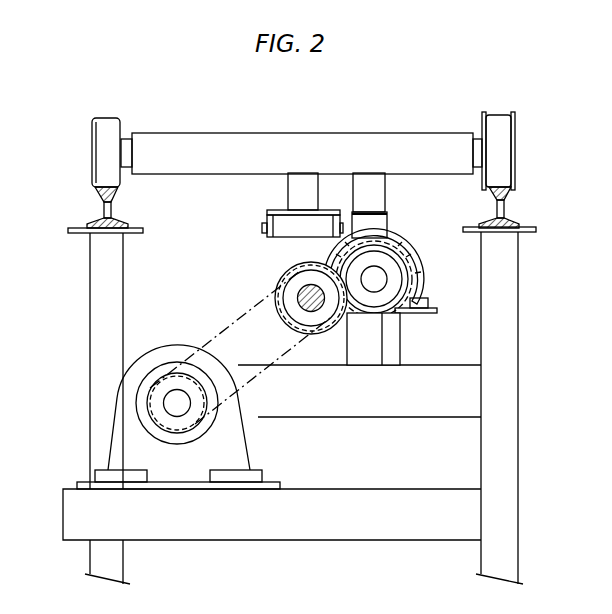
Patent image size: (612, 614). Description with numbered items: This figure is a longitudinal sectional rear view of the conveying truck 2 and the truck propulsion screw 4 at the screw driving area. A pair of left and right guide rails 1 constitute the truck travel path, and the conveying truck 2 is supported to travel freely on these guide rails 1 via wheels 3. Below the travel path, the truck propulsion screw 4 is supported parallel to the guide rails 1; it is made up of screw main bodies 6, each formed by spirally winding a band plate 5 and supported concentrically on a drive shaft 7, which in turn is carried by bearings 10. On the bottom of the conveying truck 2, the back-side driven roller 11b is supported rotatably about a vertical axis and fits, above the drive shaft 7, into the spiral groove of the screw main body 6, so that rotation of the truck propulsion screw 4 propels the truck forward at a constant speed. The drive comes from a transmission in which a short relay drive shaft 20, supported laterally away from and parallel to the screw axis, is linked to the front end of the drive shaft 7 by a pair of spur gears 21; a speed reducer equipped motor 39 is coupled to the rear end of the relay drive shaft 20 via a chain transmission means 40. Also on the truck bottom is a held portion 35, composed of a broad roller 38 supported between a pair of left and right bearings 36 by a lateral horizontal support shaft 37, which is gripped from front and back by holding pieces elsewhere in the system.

The guide rails 1 is at (97, 192).
The conveying truck 2 is at (217, 128).
The wheels 3 is at (100, 144).
The truck propulsion screw 4 is at (405, 215).
The band plate 5 is at (420, 261).
The screw main body 6 is at (419, 244).
The drive shaft 7 is at (378, 279).
The bearings 10 is at (407, 313).
The back-side driven roller 11b is at (371, 222).
The relay drive shaft 20 is at (285, 327).
The spur gears 21 is at (333, 328).
The held portion 35 is at (304, 200).
The bearings 36 is at (287, 189).
The support shaft 37 is at (262, 227).
The broad roller 38 is at (291, 232).
The speed reducer equipped motor 39 is at (123, 402).
The chain transmission means 40 is at (230, 325).